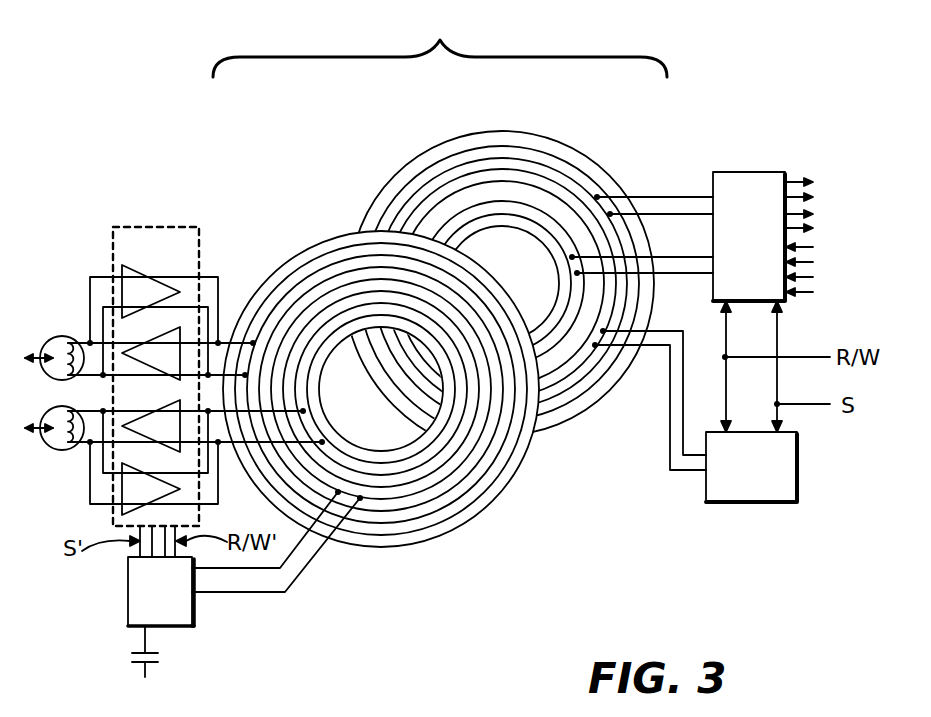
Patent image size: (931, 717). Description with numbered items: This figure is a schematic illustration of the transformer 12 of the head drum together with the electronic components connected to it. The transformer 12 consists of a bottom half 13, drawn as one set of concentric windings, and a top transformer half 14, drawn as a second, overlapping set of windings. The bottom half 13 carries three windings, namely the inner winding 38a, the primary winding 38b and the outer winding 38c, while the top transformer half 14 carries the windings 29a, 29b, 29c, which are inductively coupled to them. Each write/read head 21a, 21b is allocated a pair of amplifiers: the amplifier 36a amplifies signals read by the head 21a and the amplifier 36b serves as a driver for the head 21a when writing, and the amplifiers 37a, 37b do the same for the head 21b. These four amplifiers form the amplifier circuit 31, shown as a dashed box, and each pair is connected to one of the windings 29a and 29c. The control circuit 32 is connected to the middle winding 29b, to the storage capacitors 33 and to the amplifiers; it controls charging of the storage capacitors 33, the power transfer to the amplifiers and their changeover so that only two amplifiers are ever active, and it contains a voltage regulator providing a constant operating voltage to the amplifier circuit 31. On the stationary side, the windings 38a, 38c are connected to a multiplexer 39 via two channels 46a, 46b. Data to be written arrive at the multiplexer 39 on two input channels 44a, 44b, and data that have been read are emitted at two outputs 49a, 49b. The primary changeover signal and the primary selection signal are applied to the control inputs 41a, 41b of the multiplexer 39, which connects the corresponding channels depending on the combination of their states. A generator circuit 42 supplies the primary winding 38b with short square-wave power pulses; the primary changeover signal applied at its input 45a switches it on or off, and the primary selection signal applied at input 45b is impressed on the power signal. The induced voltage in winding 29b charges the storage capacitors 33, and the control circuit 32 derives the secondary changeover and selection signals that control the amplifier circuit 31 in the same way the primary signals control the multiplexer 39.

The transformer 12 is at (440, 46).
The bottom half of the transformer 13 is at (502, 278).
The top transformer half 14 is at (454, 358).
The write/read head 21a is at (55, 446).
The write/read head 21b is at (55, 340).
The winding 29a is at (440, 512).
The middle winding 29b is at (452, 478).
The winding 29c is at (310, 352).
The amplifier circuit 31 is at (145, 348).
The control circuit 32 is at (178, 616).
The storage capacitors 33 is at (158, 657).
The amplifier 36a is at (122, 506).
The amplifier 36b is at (175, 403).
The amplifier 37a is at (140, 272).
The amplifier 37b is at (205, 312).
The winding 38a is at (580, 398).
The primary winding 38b is at (494, 177).
The winding 38c is at (515, 213).
The multiplexer 39 is at (740, 172).
The control input 41a is at (781, 306).
The control input 41b is at (733, 308).
The generator circuit 42 is at (740, 507).
The input channel 44a is at (834, 254).
The input channel 44b is at (834, 284).
The input 45a is at (785, 431).
The input 45b is at (734, 428).
The channel 46a is at (673, 186).
The channel 46b is at (689, 284).
The output 49a is at (834, 189).
The output 49b is at (834, 220).